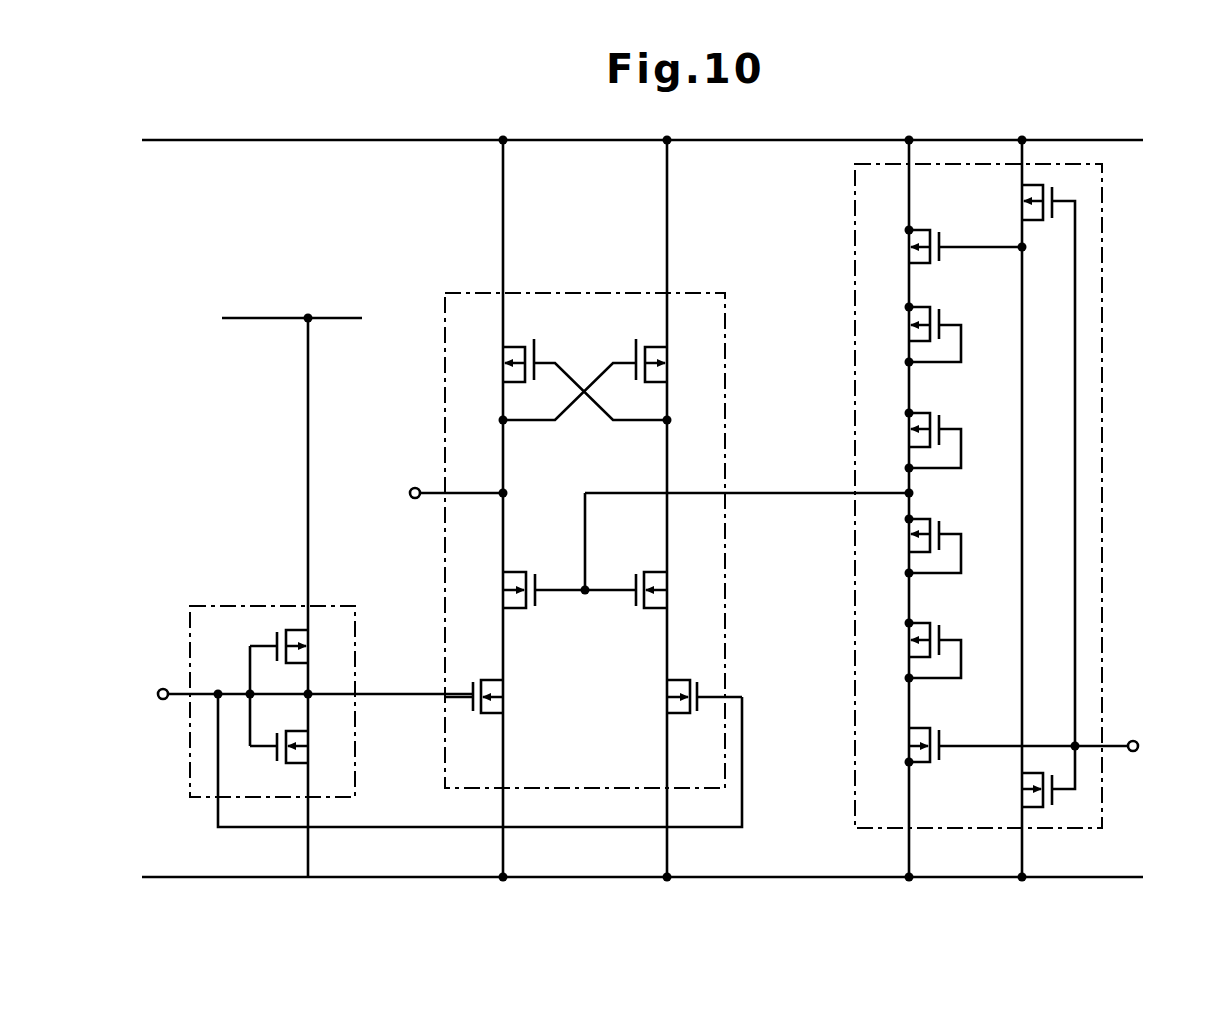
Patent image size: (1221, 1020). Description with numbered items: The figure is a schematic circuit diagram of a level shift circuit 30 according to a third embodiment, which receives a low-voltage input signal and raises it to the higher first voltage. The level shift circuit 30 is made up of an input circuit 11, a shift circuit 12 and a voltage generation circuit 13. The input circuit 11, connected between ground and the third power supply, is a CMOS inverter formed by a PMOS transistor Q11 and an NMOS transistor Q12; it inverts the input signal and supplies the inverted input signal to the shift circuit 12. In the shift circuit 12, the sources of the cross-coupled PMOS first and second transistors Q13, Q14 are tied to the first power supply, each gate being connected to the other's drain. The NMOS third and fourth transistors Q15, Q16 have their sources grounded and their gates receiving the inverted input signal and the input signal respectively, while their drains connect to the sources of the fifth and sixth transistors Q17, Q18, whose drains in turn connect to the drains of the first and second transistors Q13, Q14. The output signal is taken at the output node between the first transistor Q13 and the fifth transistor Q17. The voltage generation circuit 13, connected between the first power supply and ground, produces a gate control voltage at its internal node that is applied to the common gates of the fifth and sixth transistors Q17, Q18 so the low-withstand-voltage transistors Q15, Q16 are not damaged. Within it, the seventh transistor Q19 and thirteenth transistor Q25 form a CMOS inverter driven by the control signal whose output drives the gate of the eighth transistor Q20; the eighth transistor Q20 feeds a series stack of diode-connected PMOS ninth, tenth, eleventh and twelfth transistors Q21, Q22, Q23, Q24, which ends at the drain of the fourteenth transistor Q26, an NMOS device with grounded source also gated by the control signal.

The input circuit 11 is at (270, 604).
The shift circuit 12 is at (467, 292).
The voltage generation circuit 13 is at (855, 192).
The level shift circuit 30 is at (1144, 179).
The PMOS transistor Q11 is at (278, 640).
The NMOS transistor Q12 is at (277, 760).
The first transistor Q13 is at (534, 346).
The second transistor Q14 is at (631, 346).
The third transistor Q15 is at (473, 713).
The fourth transistor Q16 is at (697, 713).
The fifth transistor Q17 is at (535, 606).
The sixth transistor Q18 is at (636, 606).
The seventh transistor Q19 is at (1052, 220).
The eighth transistor Q20 is at (942, 232).
The ninth transistor Q21 is at (942, 310).
The tenth transistor Q22 is at (942, 416).
The eleventh transistor Q23 is at (942, 528).
The twelfth transistor Q24 is at (942, 633).
The thirteenth transistor Q25 is at (1052, 807).
The fourteenth transistor Q26 is at (942, 736).